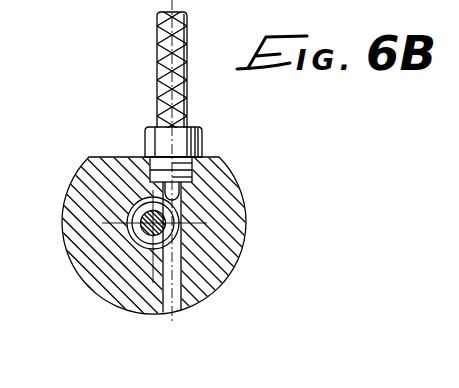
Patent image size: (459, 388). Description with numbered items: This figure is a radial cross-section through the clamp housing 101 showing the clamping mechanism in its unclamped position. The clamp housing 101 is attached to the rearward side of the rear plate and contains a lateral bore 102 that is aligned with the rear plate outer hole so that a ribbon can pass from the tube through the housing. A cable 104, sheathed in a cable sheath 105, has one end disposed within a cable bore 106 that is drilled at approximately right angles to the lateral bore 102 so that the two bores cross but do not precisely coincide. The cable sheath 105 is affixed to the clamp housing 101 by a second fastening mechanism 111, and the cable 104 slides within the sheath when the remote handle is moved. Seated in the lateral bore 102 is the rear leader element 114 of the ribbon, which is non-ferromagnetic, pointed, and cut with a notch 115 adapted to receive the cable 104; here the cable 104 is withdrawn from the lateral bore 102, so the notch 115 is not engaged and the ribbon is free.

The clamp housing 101 is at (224, 283).
The lateral bore 102 is at (146, 234).
The cable 104 is at (60, 195).
The cable sheath 105 is at (157, 49).
The cable bore 106 is at (180, 307).
The second fastening mechanism 111 is at (200, 137).
The rear leader element 114 is at (124, 210).
The notch 115 is at (140, 233).